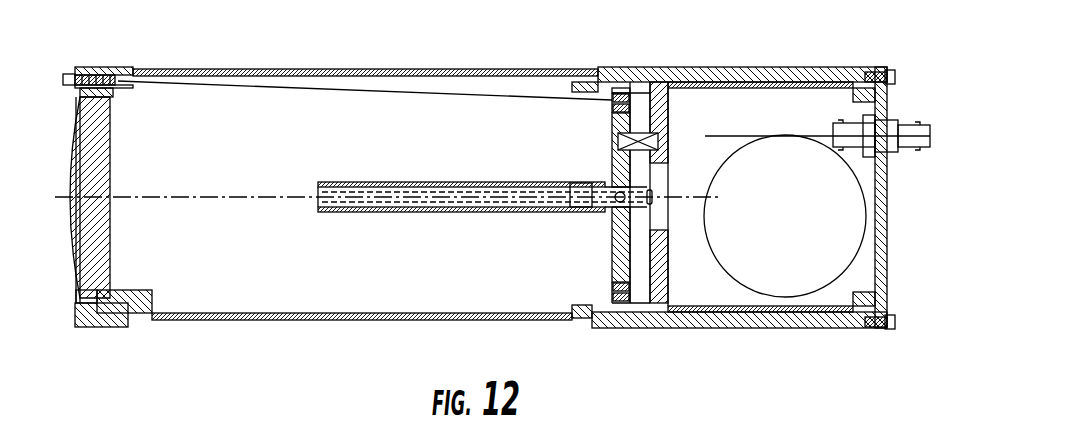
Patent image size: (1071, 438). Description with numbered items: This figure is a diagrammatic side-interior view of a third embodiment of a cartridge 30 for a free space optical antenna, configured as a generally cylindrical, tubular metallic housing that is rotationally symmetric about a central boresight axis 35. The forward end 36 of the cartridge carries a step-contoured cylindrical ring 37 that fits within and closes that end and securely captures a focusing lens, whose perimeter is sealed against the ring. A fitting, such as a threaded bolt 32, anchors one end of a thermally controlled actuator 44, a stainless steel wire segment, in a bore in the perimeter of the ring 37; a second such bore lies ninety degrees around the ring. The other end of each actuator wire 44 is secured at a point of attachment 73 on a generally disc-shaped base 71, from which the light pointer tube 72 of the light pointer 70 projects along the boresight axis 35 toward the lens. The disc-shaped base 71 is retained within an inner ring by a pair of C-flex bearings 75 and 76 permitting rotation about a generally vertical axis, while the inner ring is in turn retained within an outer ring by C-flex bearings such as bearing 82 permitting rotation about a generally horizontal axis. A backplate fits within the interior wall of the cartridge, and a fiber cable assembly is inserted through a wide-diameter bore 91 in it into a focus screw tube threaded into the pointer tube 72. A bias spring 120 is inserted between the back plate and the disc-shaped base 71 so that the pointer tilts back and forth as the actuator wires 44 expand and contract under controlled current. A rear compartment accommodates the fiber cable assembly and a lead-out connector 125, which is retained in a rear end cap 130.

The cartridge 30 is at (218, 58).
The mounting bolt 32 is at (72, 86).
The boresight axis 35 is at (179, 196).
The forward end 36 is at (80, 330).
The cylindrical ring 37 is at (120, 328).
The thermally controlled actuator 44 is at (402, 93).
The light pointer 70 is at (401, 182).
The disc-shaped base 71 is at (612, 226).
The light pointer tube 72 is at (322, 182).
The point of attachment 73 is at (612, 108).
The C-flex bearing 75 is at (632, 99).
The C-flex bearing 76 is at (604, 280).
The C-flex bearing 82 is at (604, 187).
The bore 91 is at (664, 172).
The bias spring 120 is at (658, 142).
The lead-out connector 125 is at (843, 120).
The rear end cap 130 is at (888, 284).